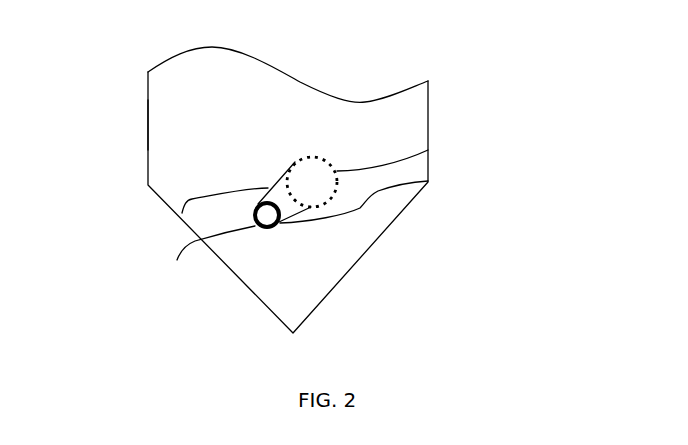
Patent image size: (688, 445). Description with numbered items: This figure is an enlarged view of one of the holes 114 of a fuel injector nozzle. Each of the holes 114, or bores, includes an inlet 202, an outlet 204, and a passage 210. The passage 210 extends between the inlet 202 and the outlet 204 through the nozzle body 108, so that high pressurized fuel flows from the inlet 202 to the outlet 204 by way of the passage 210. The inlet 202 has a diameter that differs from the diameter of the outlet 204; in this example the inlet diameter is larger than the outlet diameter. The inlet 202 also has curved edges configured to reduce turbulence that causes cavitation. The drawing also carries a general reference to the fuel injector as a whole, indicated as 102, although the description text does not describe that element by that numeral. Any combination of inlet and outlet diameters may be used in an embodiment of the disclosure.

The face mask 102 is at (456, 51).
The nozzle body 108 is at (147, 143).
The inlet 202 is at (428, 147).
The outlet 204 is at (428, 181).
The passage 210 is at (181, 214).
The hole 114 is at (177, 260).